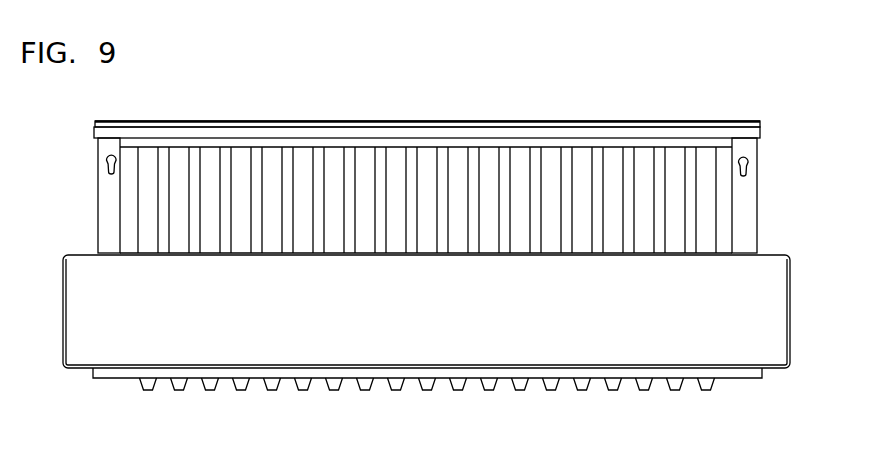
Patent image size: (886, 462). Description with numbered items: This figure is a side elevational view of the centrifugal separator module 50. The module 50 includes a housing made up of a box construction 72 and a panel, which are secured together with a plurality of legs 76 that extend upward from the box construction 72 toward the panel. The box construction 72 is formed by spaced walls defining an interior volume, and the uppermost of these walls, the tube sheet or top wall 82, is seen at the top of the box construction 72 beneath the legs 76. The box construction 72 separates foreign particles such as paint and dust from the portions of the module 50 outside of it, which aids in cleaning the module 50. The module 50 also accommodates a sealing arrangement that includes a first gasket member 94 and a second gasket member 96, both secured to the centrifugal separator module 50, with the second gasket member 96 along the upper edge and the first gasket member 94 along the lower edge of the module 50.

The centrifugal separator module 50 is at (373, 102).
The second gasket member 96 is at (743, 121).
The legs 76 is at (98, 196).
The top wall 82 is at (757, 208).
The box construction 72 is at (792, 293).
The first gasket member 94 is at (752, 378).